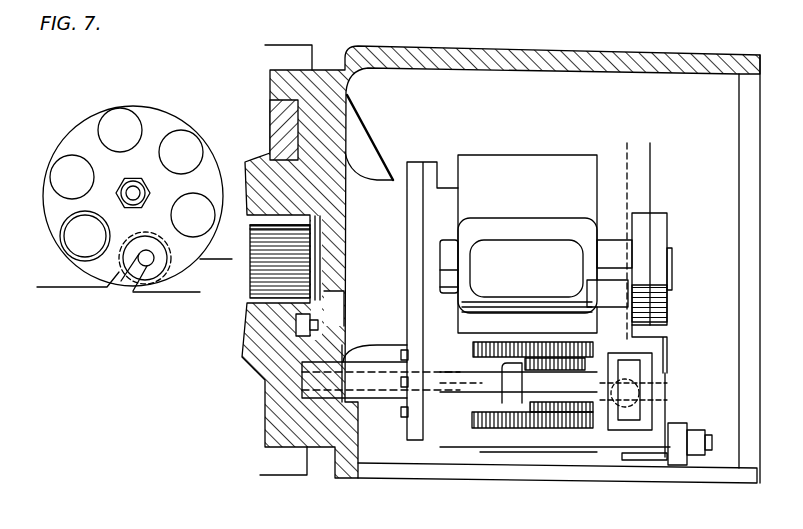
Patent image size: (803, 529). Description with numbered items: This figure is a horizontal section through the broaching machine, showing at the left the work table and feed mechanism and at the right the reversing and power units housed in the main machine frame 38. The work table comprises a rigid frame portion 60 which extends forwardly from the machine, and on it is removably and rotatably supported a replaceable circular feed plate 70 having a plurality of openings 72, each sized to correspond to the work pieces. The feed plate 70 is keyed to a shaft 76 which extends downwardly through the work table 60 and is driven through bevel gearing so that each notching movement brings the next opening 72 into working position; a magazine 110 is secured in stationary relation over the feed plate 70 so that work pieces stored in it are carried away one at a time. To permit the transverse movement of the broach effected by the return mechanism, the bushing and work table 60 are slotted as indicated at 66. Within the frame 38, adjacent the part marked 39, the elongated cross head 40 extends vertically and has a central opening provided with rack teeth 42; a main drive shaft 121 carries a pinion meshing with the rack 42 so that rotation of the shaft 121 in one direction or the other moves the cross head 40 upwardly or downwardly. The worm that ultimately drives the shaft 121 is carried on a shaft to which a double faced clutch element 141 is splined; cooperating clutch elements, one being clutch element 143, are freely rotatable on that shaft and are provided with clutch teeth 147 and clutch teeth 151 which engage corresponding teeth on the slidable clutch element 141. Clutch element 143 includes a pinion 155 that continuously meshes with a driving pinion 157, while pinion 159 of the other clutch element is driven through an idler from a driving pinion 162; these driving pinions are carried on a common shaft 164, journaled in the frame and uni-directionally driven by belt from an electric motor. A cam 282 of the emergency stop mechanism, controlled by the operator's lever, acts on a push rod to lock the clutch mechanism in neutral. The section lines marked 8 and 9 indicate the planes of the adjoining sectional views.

The main machine frame 38 is at (325, 108).
The bearing ring 39 is at (267, 128).
The cross head 40 is at (287, 195).
The rack teeth 42 is at (297, 222).
The main drive shaft 121 is at (250, 283).
The common shaft 164 is at (427, 400).
The driving pinion 162 is at (498, 348).
The pinion 159 is at (567, 347).
The double faced clutch element 141 is at (522, 347).
The clutch teeth 151 is at (542, 347).
The driving pinion 157 is at (475, 430).
The clutch teeth 147 is at (508, 428).
The clutch element 143 is at (540, 415).
The pinion 155 is at (578, 430).
The cam 282 is at (676, 423).
The section line 8 is at (458, 378).
The section line 9 is at (458, 436).
The rigid frame portion 60 is at (175, 272).
The openings 72 is at (128, 118).
The circular feed plate 70 is at (163, 123).
The shaft 76 is at (136, 190).
The magazine 110 is at (62, 251).
The slot 66 is at (140, 263).